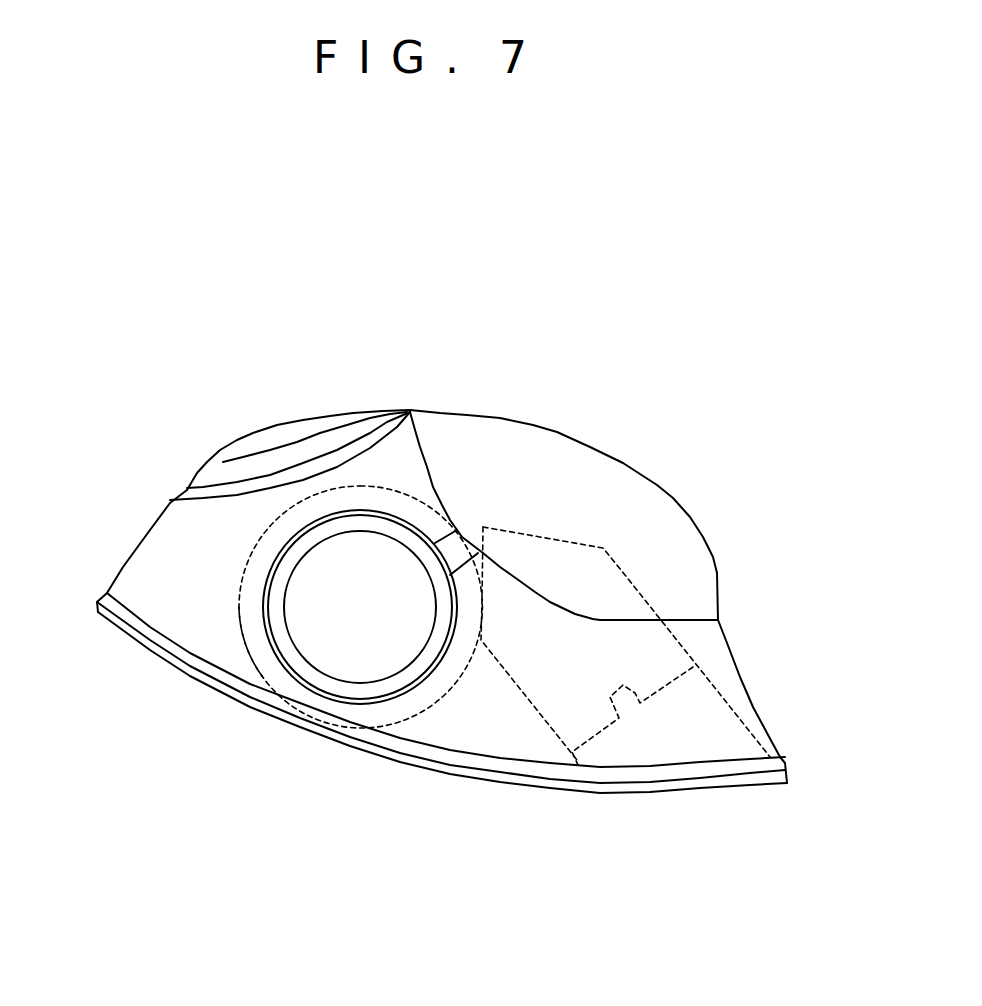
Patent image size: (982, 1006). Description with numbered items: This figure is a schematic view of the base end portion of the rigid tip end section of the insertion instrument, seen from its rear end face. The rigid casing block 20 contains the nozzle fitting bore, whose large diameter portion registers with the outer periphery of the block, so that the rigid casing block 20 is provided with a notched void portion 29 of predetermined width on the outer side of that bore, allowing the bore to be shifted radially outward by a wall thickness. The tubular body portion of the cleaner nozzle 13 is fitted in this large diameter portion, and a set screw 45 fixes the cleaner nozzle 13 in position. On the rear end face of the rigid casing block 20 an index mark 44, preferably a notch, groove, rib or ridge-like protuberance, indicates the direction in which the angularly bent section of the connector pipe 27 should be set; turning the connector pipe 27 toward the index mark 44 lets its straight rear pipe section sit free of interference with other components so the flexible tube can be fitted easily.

The rigid casing block 20 is at (200, 540).
The cleaner nozzle 13 is at (343, 487).
The connector pipe 27 is at (340, 693).
The notched void portion 29 is at (192, 732).
The index mark 44 is at (464, 549).
The set screw 45 is at (625, 575).